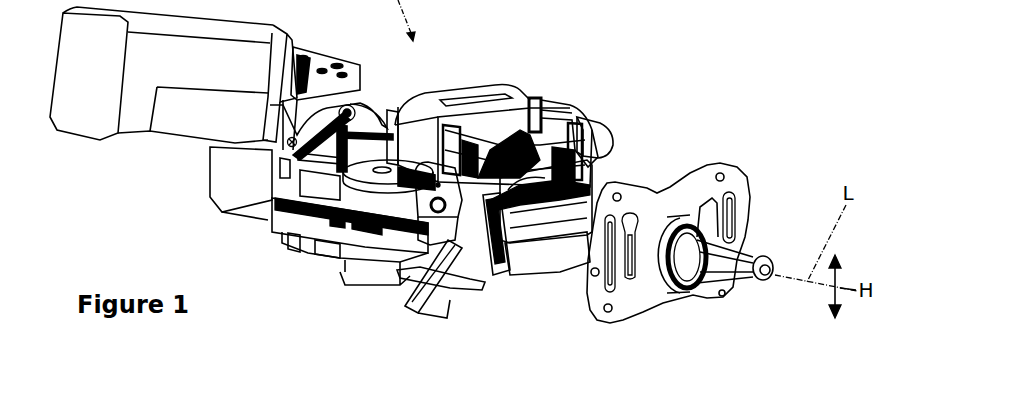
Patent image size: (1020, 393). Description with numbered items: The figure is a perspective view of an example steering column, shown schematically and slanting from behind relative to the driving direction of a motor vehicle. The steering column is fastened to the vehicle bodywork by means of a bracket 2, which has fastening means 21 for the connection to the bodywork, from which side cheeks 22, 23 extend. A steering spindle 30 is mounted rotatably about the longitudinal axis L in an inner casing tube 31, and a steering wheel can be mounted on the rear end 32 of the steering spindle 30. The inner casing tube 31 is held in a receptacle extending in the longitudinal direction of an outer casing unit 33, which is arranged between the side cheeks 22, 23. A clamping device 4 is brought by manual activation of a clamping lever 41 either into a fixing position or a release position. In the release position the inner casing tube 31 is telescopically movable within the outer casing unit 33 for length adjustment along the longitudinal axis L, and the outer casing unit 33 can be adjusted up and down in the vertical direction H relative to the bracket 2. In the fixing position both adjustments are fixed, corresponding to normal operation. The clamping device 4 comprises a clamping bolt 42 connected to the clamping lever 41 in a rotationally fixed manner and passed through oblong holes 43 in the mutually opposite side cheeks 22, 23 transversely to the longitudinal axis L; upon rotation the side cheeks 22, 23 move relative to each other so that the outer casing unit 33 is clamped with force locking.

The bracket 2 is at (610, 127).
The clamping device 4 is at (402, 293).
The fastening means 21 is at (387, 125).
The side cheek 22 is at (458, 140).
The side cheek 23 is at (555, 120).
The steering spindle 30 is at (693, 243).
The inner casing tube 31 is at (578, 200).
The rear end 32 is at (760, 260).
The outer casing unit 33 is at (313, 193).
The clamping lever 41 is at (427, 297).
The clamping bolt 42 is at (532, 97).
The oblong holes 43 is at (475, 133).